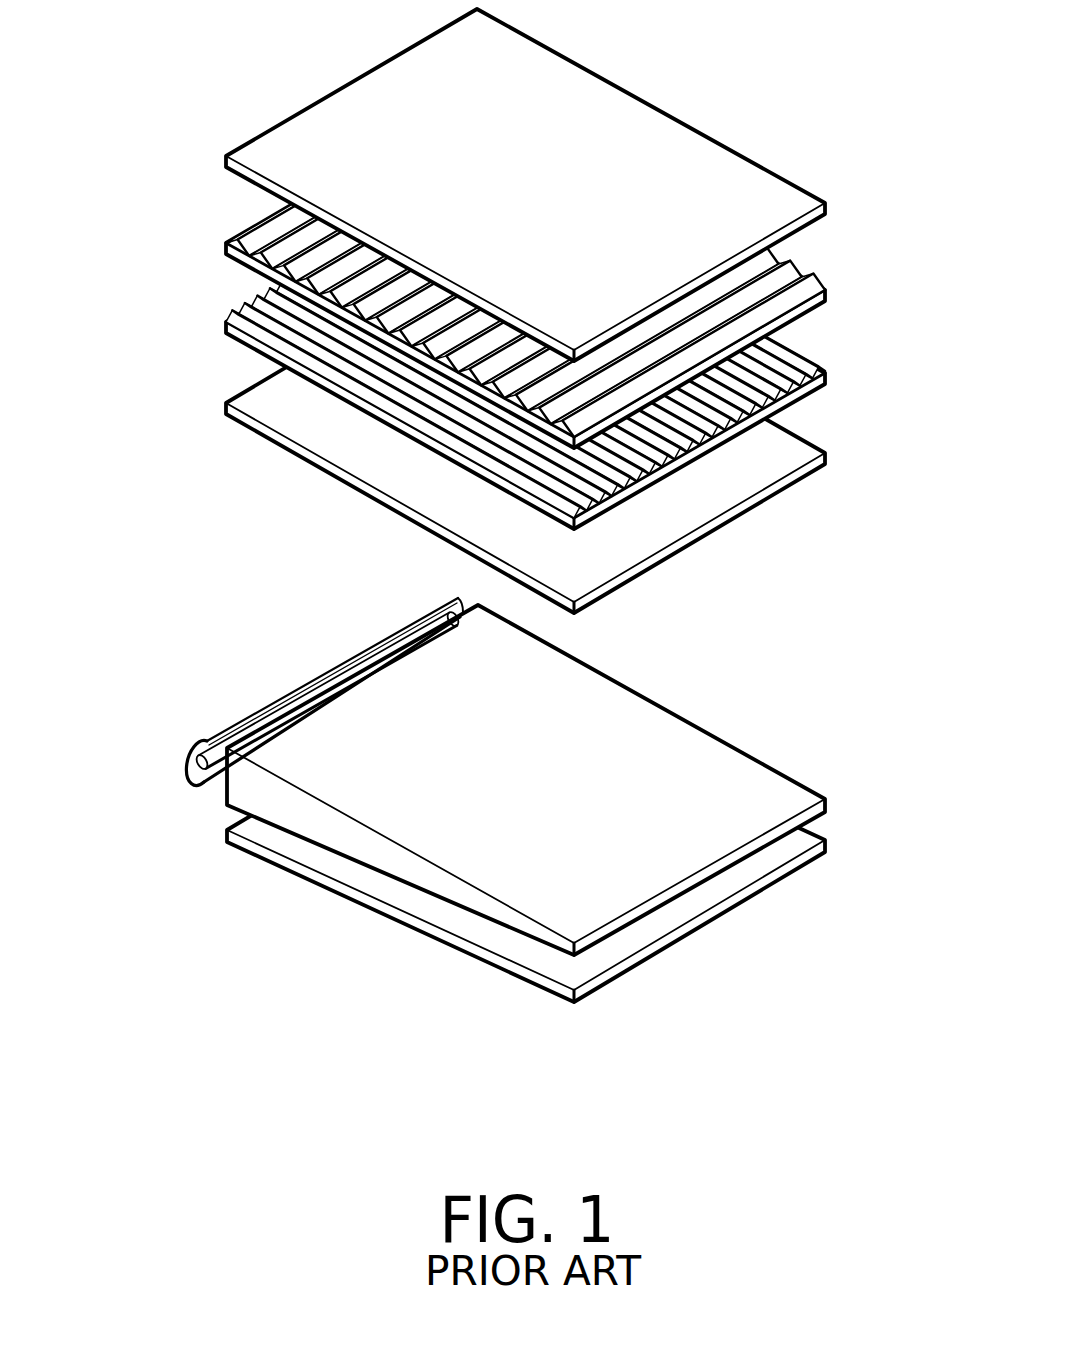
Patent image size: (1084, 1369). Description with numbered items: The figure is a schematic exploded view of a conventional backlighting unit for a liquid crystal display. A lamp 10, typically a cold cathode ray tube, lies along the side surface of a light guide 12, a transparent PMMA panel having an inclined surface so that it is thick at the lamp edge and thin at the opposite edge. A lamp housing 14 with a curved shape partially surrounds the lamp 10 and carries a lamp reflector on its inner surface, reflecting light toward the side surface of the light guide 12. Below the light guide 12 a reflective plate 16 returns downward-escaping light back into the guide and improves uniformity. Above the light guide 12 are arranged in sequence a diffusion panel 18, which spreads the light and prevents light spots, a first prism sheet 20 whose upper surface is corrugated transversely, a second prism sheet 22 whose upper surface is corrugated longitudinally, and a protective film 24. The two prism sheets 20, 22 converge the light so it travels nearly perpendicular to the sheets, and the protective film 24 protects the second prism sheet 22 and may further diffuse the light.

The lamp 10 is at (200, 775).
The light guide 12 is at (643, 713).
The lamp housing 14 is at (188, 747).
The reflective plate 16 is at (415, 920).
The diffusion panel 18 is at (778, 458).
The first prism sheet 20 is at (823, 382).
The second prism sheet 22 is at (810, 302).
The protective film 24 is at (645, 125).